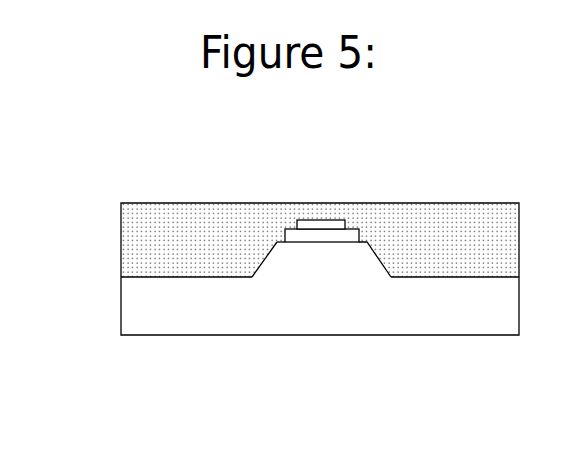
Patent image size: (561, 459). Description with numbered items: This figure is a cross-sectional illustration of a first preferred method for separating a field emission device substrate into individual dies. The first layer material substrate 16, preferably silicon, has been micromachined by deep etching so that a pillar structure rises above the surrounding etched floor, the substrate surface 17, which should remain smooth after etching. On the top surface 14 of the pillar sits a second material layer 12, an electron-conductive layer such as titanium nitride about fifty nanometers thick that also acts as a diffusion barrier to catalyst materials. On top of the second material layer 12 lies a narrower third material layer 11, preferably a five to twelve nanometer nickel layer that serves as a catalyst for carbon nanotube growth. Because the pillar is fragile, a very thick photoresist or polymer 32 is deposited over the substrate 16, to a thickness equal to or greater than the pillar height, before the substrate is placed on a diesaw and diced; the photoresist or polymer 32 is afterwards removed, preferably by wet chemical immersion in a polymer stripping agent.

The third material layer 11 is at (325, 217).
The second material layer 12 is at (290, 226).
The top surface of the pillar structure 14 is at (275, 238).
The first layer material substrate 16 is at (137, 300).
The substrate surface 17 is at (172, 272).
The photoresist or polymer layer 32 is at (423, 212).